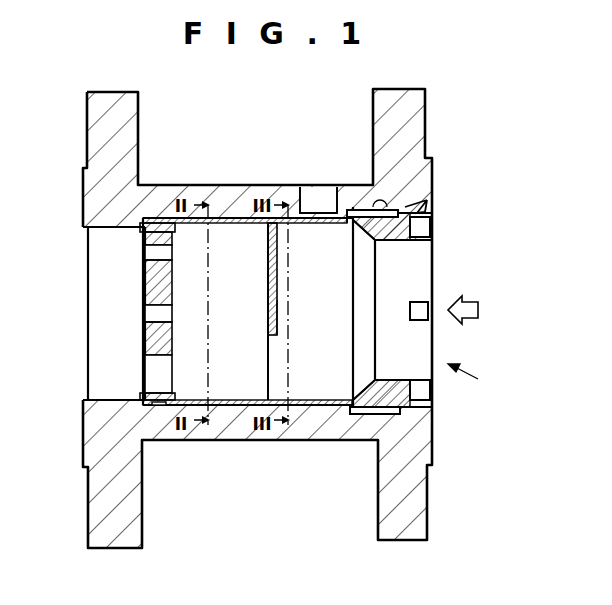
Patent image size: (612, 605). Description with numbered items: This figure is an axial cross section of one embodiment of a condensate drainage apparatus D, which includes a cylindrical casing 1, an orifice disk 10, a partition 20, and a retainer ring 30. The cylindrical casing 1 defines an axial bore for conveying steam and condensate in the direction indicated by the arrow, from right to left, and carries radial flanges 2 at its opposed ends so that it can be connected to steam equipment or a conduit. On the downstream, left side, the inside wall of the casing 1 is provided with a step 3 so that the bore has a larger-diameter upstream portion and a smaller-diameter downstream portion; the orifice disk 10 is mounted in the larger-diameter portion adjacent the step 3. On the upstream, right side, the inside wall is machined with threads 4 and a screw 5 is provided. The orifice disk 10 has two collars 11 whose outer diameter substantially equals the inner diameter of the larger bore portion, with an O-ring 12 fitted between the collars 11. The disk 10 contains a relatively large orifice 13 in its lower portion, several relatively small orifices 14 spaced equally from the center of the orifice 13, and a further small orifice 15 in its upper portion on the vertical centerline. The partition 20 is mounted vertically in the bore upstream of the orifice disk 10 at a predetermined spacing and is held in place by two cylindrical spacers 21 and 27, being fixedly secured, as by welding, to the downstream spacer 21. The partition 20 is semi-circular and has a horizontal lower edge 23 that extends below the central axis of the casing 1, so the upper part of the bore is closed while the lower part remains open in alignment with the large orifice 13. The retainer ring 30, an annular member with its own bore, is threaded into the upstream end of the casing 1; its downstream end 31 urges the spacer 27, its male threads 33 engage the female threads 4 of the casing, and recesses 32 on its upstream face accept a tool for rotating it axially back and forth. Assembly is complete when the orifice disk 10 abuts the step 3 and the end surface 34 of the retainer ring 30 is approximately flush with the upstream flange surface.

The cylindrical casing 1 is at (241, 186).
The radial flange 2 is at (100, 526).
The step 3 is at (148, 398).
The threads 4 is at (383, 417).
The screw 5 is at (310, 197).
The orifice disk 10 is at (148, 228).
The collar 11 is at (150, 420).
The O-ring 12 is at (164, 412).
The orifice 13 is at (155, 368).
The orifice 14 is at (155, 313).
The orifice 15 is at (155, 252).
The partition 20 is at (270, 336).
The spacer 21 is at (212, 217).
The lower edge 23 is at (282, 300).
The spacer 27 is at (341, 212).
The retainer ring 30 is at (425, 205).
The downstream end 31 is at (348, 224).
The recess 32 is at (428, 227).
The male threads 33 is at (397, 210).
The end surface 34 is at (432, 405).
The condensate drainage apparatus D is at (474, 380).